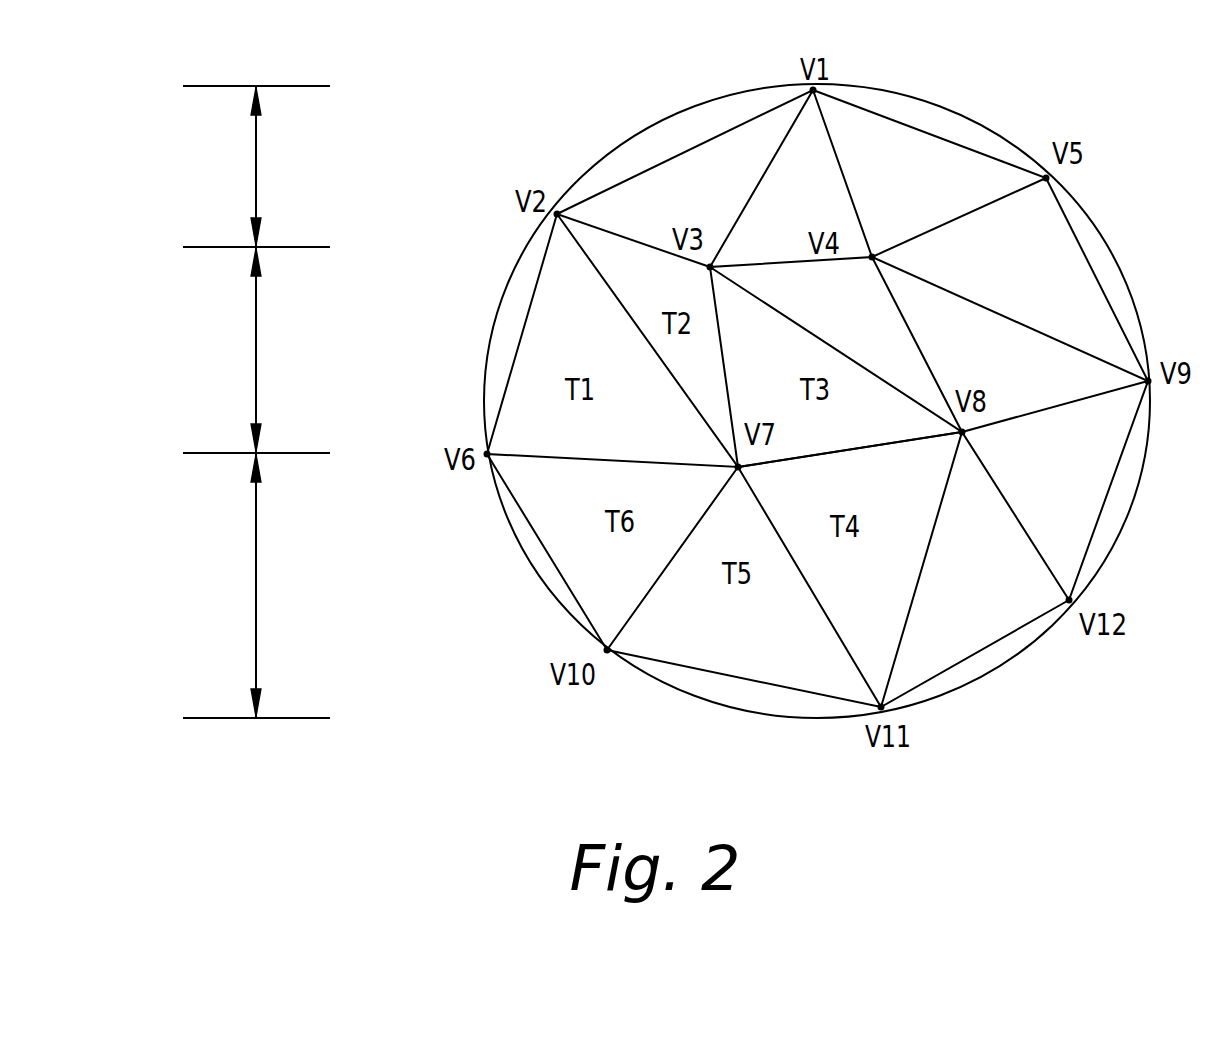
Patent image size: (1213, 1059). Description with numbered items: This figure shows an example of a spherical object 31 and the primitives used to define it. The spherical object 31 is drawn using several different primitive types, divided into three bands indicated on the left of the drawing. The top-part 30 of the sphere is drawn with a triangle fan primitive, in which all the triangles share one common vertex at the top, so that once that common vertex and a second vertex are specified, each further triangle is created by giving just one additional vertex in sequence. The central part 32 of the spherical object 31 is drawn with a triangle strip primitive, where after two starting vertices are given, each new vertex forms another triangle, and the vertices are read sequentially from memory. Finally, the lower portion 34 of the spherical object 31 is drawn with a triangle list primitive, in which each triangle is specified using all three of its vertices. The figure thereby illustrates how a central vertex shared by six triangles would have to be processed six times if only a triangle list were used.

The top-part of the sphere 30 is at (255, 167).
The spherical object 31 is at (670, 122).
The central part 32 is at (255, 357).
The lower portion 34 is at (255, 587).